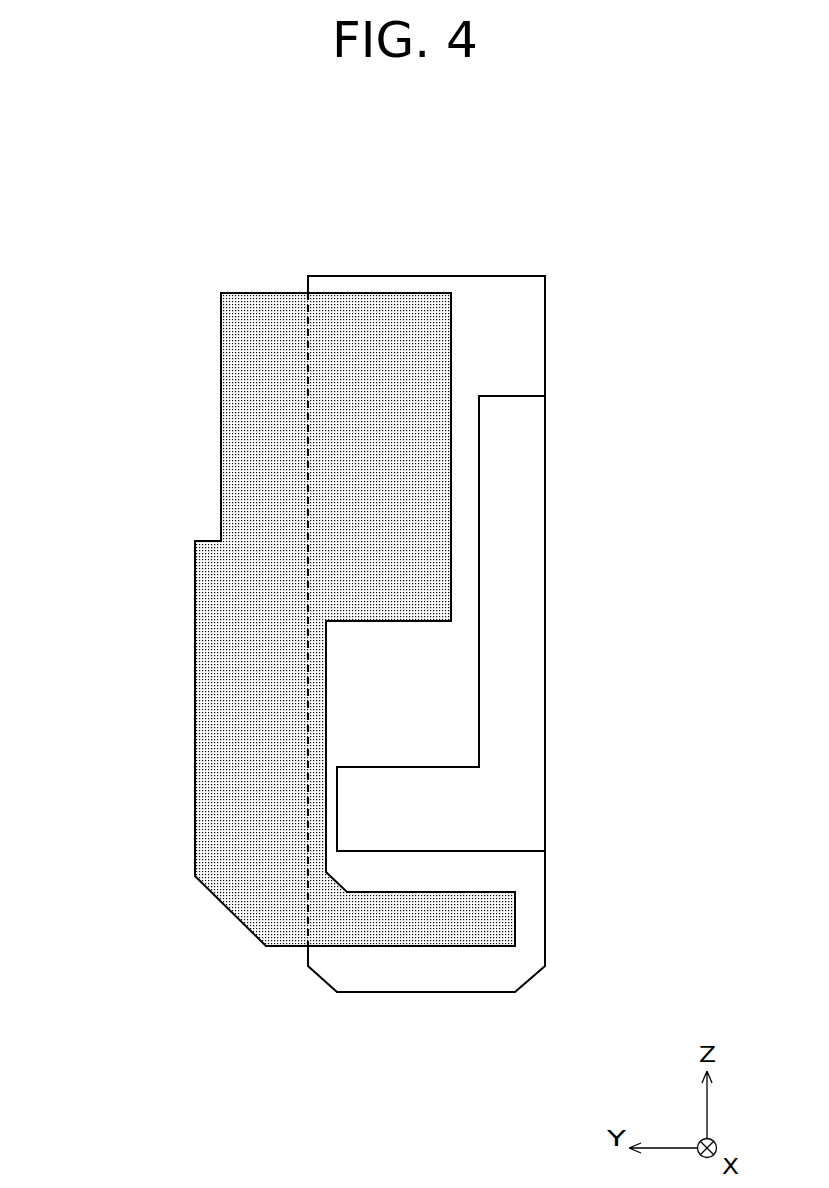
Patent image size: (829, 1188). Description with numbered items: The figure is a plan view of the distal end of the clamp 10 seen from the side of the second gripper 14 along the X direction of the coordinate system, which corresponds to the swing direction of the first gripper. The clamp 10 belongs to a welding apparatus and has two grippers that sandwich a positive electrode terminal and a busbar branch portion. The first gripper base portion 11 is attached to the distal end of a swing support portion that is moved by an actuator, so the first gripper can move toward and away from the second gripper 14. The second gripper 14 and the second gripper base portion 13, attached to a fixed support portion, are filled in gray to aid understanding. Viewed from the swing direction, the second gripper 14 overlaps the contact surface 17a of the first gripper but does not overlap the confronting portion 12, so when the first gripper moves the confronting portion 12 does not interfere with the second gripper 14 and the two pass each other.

The clamp 10 is at (186, 216).
The first gripper base portion 11 is at (523, 271).
The confronting portion 12 is at (398, 770).
The second gripper base portion 13 is at (217, 388).
The second gripper 14 is at (505, 913).
The contact surface 17a is at (452, 970).